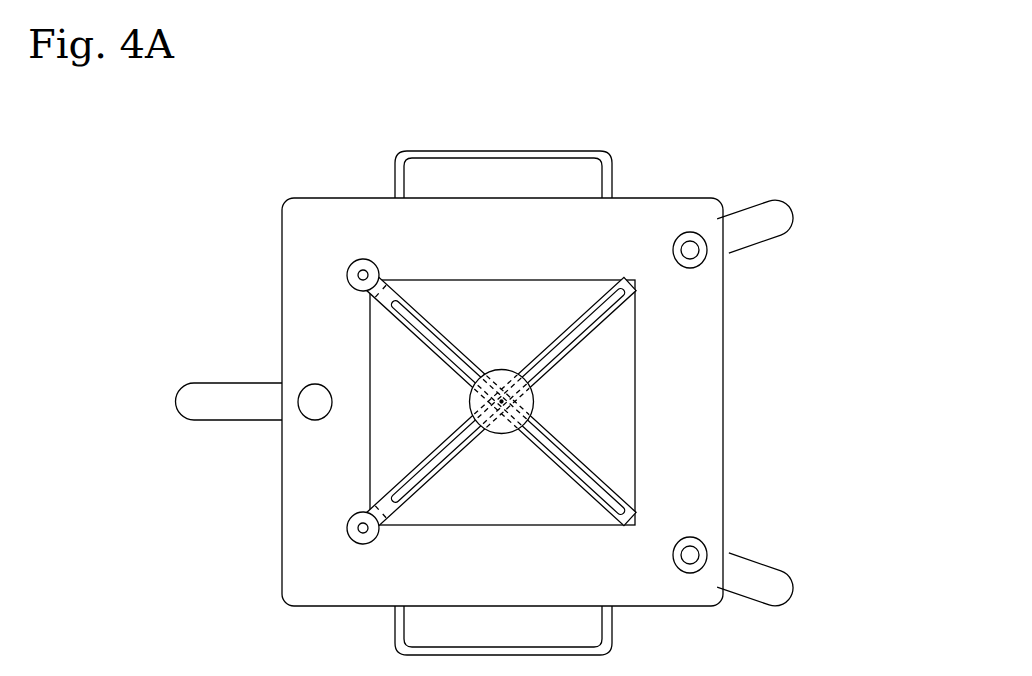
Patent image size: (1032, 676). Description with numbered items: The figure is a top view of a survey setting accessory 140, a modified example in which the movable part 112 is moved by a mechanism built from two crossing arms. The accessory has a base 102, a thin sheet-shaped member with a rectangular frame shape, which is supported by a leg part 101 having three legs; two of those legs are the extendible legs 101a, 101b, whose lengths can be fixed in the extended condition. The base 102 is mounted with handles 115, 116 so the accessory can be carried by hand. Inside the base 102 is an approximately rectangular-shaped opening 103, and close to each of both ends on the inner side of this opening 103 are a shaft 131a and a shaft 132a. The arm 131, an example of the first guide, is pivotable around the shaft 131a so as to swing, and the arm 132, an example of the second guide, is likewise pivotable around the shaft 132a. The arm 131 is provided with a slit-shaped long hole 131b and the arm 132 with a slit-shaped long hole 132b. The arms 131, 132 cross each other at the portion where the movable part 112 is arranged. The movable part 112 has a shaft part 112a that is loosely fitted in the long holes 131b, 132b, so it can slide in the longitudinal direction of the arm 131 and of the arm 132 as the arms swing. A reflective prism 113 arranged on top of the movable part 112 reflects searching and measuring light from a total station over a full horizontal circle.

The leg part 101 is at (182, 377).
The extendible leg 101a is at (760, 577).
The extendible leg 101b is at (777, 218).
The base 102 is at (657, 218).
The opening 103 is at (595, 357).
The movable part 112 is at (508, 363).
The shaft part 112a is at (503, 408).
The reflective prism 113 is at (530, 388).
The handle 115 is at (542, 151).
The handle 116 is at (613, 633).
The arm 131 is at (469, 310).
The shaft 131a is at (362, 274).
The long hole 131b is at (508, 407).
The arm 132 is at (410, 411).
The shaft 132a is at (362, 527).
The long hole 132b is at (508, 395).
The survey setting accessory 140 is at (738, 162).